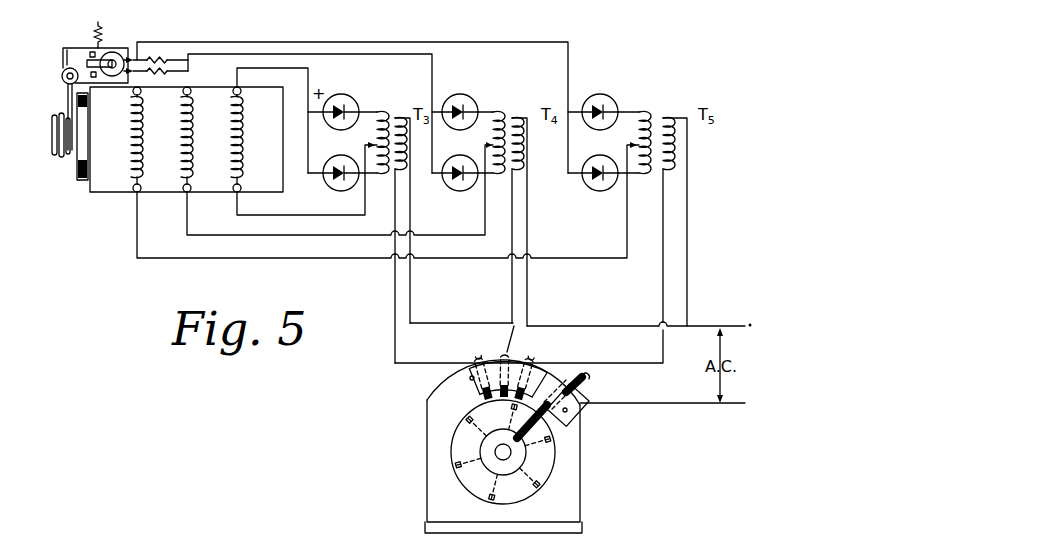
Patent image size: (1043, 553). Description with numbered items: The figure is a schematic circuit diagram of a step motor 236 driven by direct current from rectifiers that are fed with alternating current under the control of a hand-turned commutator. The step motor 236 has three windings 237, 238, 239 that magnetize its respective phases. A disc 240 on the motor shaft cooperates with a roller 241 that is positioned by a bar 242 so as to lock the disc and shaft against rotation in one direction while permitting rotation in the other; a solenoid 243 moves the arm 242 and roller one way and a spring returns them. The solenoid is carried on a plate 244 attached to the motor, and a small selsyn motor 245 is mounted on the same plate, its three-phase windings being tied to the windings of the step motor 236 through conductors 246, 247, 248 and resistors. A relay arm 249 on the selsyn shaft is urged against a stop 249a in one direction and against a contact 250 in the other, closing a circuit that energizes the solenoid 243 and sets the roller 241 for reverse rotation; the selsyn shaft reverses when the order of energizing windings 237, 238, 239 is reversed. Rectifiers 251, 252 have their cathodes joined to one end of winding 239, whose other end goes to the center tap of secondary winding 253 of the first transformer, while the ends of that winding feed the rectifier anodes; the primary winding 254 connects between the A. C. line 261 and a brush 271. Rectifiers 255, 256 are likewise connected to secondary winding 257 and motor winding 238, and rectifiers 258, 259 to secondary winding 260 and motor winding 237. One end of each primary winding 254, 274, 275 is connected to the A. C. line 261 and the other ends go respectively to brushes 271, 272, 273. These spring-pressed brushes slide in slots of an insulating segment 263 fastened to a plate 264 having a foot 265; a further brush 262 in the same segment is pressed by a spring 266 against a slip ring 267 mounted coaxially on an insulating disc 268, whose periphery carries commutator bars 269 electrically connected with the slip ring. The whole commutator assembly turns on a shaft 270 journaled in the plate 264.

The step motor 236 is at (102, 193).
The winding 237 is at (132, 132).
The winding 238 is at (192, 115).
The winding 239 is at (230, 118).
The disc 240 is at (80, 177).
The roller 241 is at (80, 107).
The bar 242 is at (68, 90).
The solenoid 243 is at (62, 75).
The plate 244 is at (65, 53).
The selsyn motor 245 is at (113, 50).
The conductor 246 is at (133, 53).
The conductor 247 is at (165, 62).
The conductor 248 is at (190, 74).
The relay arm 249 is at (97, 72).
The stop 249a is at (94, 78).
The contact 250 is at (90, 53).
The rectifier 251 is at (347, 93).
The rectifier 252 is at (340, 183).
The secondary winding 253 is at (380, 112).
The primary winding 254 is at (398, 170).
The rectifier 255 is at (465, 95).
The rectifier 256 is at (458, 187).
The secondary winding 257 is at (497, 113).
The rectifier 258 is at (607, 97).
The rectifier 259 is at (593, 193).
The secondary winding 260 is at (640, 115).
The A. C. line 261 is at (623, 324).
The brush 262 is at (577, 410).
The insulating segment 263 is at (599, 409).
The plate 264 is at (582, 447).
The foot 265 is at (568, 527).
The spring 266 is at (587, 380).
The slip ring 267 is at (527, 462).
The insulating disc 268 is at (522, 493).
The commutator bars 269 is at (467, 417).
The shaft 270 is at (495, 450).
The brush 271 is at (478, 363).
The brush 272 is at (510, 353).
The brush 273 is at (537, 355).
The primary winding 274 is at (515, 170).
The primary winding 275 is at (665, 175).